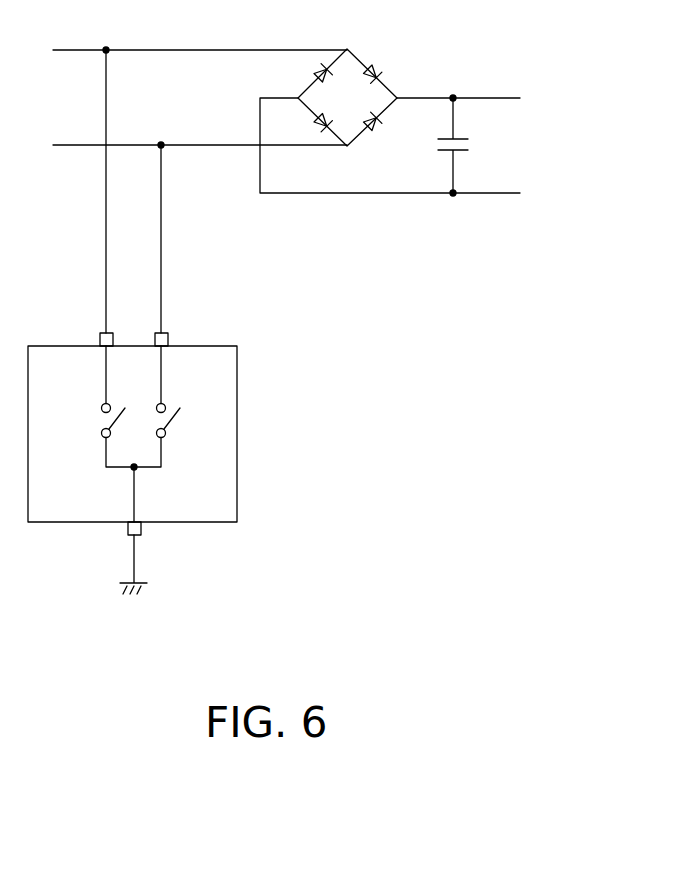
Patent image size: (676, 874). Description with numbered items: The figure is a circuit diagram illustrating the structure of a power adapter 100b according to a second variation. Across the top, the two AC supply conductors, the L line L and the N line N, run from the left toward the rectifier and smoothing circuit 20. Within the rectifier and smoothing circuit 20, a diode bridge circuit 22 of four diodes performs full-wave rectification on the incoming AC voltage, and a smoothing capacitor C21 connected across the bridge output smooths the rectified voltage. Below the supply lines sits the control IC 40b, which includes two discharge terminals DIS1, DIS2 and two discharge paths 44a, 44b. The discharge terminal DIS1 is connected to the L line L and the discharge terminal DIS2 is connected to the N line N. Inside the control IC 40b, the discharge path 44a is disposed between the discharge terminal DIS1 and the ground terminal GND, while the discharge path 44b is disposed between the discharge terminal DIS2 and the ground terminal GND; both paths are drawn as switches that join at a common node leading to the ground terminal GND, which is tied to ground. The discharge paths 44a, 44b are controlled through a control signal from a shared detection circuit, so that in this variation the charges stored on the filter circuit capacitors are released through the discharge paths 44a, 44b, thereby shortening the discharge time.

The power adapter 100b is at (286, 340).
The L line L is at (184, 48).
The N line N is at (189, 143).
The rectifier and smoothing circuit 20 is at (402, 132).
The diode bridge circuit 22 is at (386, 58).
The smoothing capacitor C21 is at (491, 145).
The control IC 40b is at (172, 402).
The discharge terminal DIS1 is at (100, 332).
The discharge terminal DIS2 is at (167, 332).
The discharge path 44a is at (100, 425).
The discharge path 44b is at (168, 425).
The ground terminal GND is at (141, 535).